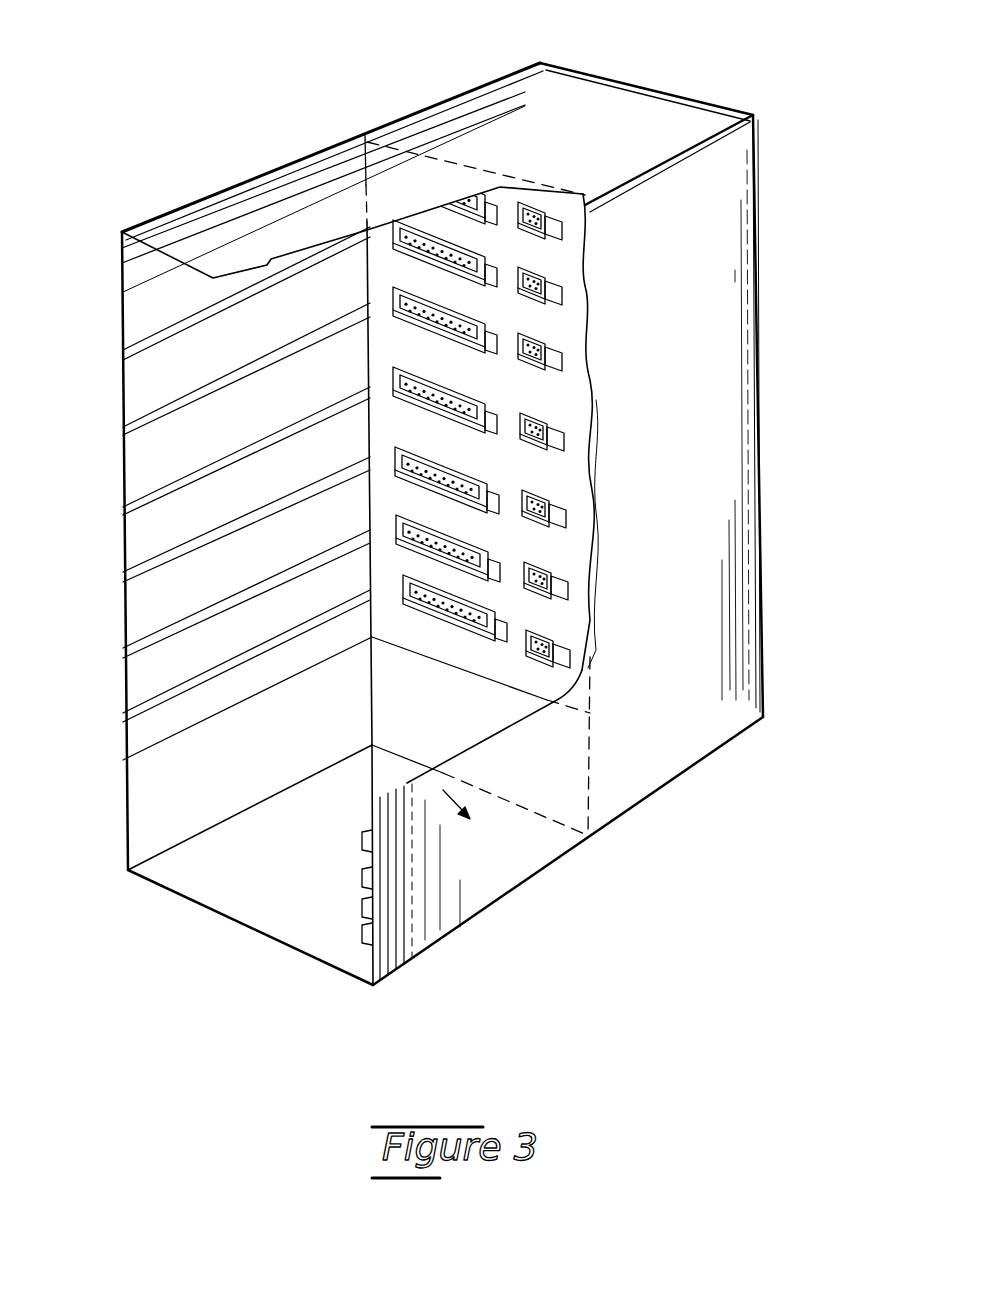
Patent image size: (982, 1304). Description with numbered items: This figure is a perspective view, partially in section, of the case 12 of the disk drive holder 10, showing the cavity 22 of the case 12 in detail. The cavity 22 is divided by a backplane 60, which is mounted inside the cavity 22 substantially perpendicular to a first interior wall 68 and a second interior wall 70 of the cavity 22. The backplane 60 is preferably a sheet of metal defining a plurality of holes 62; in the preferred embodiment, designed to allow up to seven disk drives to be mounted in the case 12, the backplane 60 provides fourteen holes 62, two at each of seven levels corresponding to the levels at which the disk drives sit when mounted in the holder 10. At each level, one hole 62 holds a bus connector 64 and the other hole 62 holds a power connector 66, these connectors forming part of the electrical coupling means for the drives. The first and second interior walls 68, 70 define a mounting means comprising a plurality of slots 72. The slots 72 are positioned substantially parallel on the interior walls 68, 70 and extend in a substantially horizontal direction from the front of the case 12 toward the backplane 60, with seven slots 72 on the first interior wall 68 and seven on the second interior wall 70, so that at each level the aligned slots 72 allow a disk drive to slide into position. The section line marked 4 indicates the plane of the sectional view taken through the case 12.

The holder 10 is at (433, 95).
The case 12 is at (300, 172).
The cavity 22 is at (733, 234).
The backplane 60 is at (497, 397).
The holes 62 is at (413, 596).
The bus connector 64 is at (445, 446).
The power connector 66 is at (566, 438).
The first interior wall 68 is at (407, 783).
The second interior wall 70 is at (236, 497).
The slots 72 is at (122, 292).
The section line 4- 4 is at (712, 556).